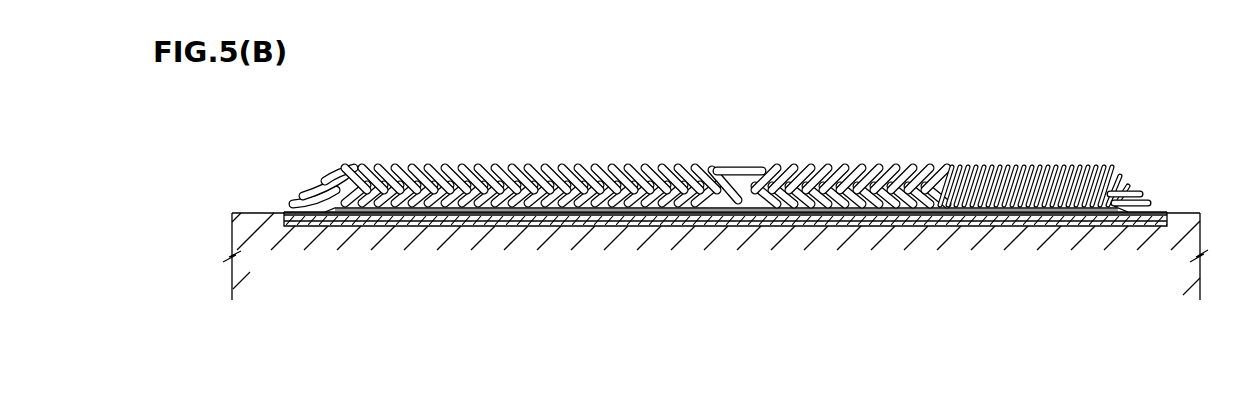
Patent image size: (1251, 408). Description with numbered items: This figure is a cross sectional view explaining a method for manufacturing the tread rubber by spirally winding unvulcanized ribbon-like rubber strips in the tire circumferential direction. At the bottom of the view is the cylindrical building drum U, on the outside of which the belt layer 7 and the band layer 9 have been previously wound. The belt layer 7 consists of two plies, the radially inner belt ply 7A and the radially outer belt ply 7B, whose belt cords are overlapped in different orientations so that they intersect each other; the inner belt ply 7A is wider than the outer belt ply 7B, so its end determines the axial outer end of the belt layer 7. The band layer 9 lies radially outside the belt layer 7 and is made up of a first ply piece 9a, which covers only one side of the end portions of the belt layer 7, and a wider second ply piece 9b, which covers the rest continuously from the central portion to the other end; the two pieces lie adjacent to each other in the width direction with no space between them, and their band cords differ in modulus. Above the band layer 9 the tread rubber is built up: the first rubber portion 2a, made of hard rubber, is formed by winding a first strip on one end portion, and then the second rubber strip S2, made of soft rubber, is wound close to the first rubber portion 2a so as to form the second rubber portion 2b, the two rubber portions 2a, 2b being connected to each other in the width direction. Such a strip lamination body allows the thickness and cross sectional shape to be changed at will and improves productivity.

The cylindrical building drum U is at (1188, 213).
The belt layer 7 is at (580, 331).
The inner belt ply 7A is at (495, 222).
The outer belt ply 7B is at (560, 222).
The band layer 9 is at (1050, 331).
The first ply piece 9a is at (1050, 210).
The second ply piece 9b is at (884, 212).
The second rubber strip S2 is at (558, 167).
The first rubber portion 2a is at (1075, 143).
The second rubber portion 2b is at (742, 151).